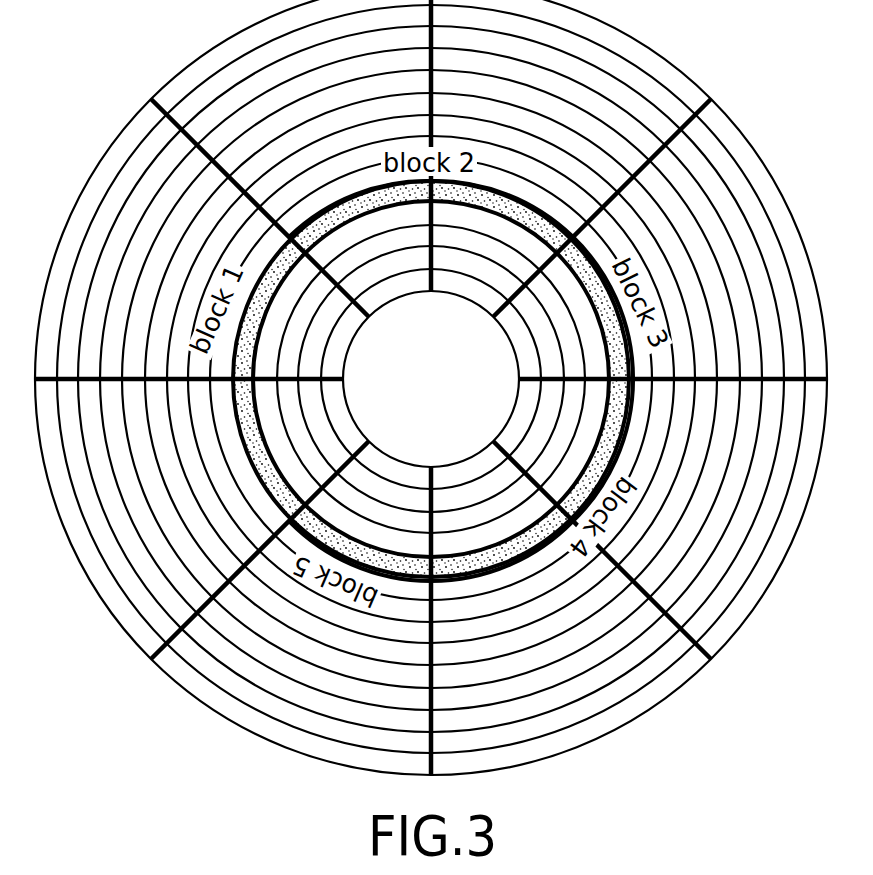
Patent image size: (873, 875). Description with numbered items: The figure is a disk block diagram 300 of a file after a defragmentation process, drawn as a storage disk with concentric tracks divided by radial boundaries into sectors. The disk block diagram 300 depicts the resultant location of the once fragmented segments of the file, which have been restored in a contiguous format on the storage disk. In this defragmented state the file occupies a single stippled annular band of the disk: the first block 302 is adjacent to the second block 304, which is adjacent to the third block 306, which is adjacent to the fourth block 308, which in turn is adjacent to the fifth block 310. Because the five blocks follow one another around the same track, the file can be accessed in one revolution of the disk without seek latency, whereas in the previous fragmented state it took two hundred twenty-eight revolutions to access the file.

The disk block diagram 300 is at (108, 94).
The first block 302 is at (268, 262).
The second block 304 is at (333, 203).
The third block 306 is at (591, 258).
The fourth block 308 is at (612, 422).
The fifth block 310 is at (408, 573).